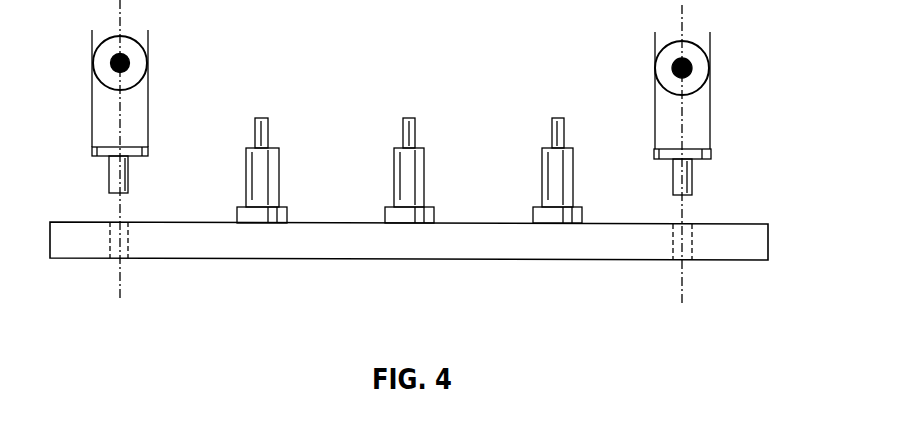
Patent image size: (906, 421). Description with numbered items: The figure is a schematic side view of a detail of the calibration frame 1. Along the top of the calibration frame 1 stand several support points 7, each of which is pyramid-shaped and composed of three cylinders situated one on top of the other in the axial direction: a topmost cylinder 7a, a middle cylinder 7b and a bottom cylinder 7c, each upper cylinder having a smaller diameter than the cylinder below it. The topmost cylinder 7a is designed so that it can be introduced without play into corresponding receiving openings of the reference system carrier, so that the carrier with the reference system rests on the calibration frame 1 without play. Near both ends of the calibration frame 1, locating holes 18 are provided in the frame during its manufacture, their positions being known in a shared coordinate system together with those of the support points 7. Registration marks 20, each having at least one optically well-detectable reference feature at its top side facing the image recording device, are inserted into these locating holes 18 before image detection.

The calibration frame 1 is at (481, 242).
The support point 7 is at (243, 114).
The topmost cylinder 7a is at (262, 130).
The middle cylinder 7b is at (270, 177).
The bottom cylinder 7c is at (282, 215).
The locating hole 18 is at (122, 241).
The registration mark 20 is at (128, 178).